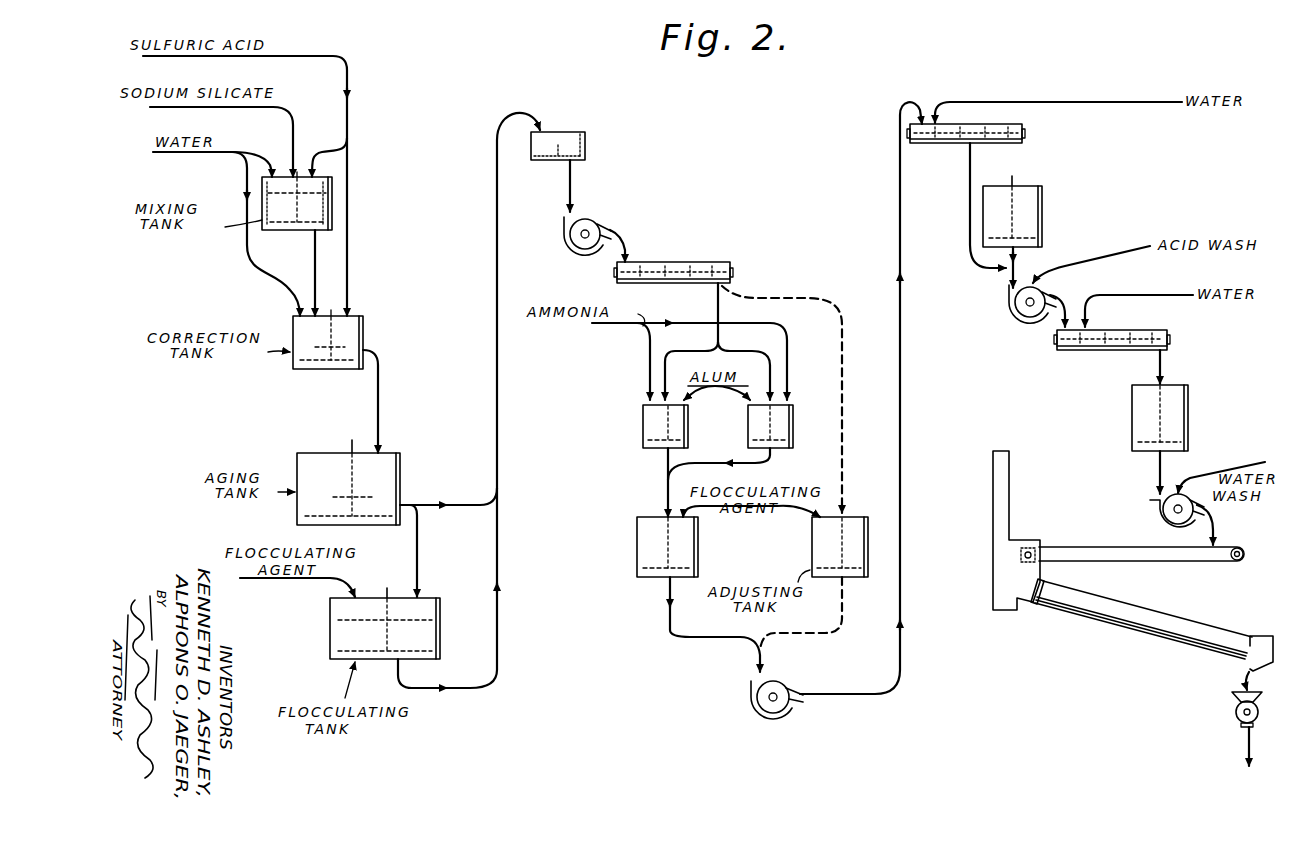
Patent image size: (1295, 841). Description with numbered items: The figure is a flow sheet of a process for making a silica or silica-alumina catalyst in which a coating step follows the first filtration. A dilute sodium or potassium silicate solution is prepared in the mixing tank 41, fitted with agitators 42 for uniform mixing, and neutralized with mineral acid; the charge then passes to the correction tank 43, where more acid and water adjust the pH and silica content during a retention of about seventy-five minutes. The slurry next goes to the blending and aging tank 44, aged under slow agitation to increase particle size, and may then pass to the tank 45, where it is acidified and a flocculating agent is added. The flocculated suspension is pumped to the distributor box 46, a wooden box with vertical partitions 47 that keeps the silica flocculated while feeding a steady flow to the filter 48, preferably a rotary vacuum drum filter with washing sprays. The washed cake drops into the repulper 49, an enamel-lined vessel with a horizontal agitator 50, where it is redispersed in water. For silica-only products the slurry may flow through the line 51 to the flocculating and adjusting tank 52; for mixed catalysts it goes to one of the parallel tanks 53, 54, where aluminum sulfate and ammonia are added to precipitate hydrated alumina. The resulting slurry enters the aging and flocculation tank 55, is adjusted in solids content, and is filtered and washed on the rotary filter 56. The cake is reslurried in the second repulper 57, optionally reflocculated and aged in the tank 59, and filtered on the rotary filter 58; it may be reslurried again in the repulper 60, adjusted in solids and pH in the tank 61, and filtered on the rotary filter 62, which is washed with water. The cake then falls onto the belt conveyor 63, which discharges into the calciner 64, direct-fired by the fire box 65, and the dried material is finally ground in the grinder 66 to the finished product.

The mixing tank 41 is at (332, 209).
The agitators 42 is at (287, 232).
The correction tank 43 is at (310, 370).
The blending and aging tank 44 is at (297, 510).
The flocculating tank 45 is at (330, 635).
The distributor box 46 is at (585, 146).
The vertical partitions 47 is at (556, 131).
The first filter 48 is at (590, 221).
The repulper 49 is at (658, 262).
The horizontal agitator 50 is at (722, 262).
The line 51 is at (792, 297).
The flocculating and adjusting tank 52 is at (812, 550).
The tank 53 is at (643, 432).
The tank 54 is at (748, 427).
The aging and flocculation tank 55 is at (637, 552).
The filter 56 is at (752, 692).
The second repulper 57 is at (1022, 142).
The rotary filter 58 is at (1018, 318).
The tank 59 is at (1042, 210).
The repulper 60 is at (1100, 350).
The tank 61 is at (1132, 434).
The rotary filter 62 is at (1152, 512).
The belt conveyor 63 is at (1166, 562).
The calciner 64 is at (1145, 633).
The fire box 65 is at (1248, 636).
The grinder 66 is at (1235, 716).